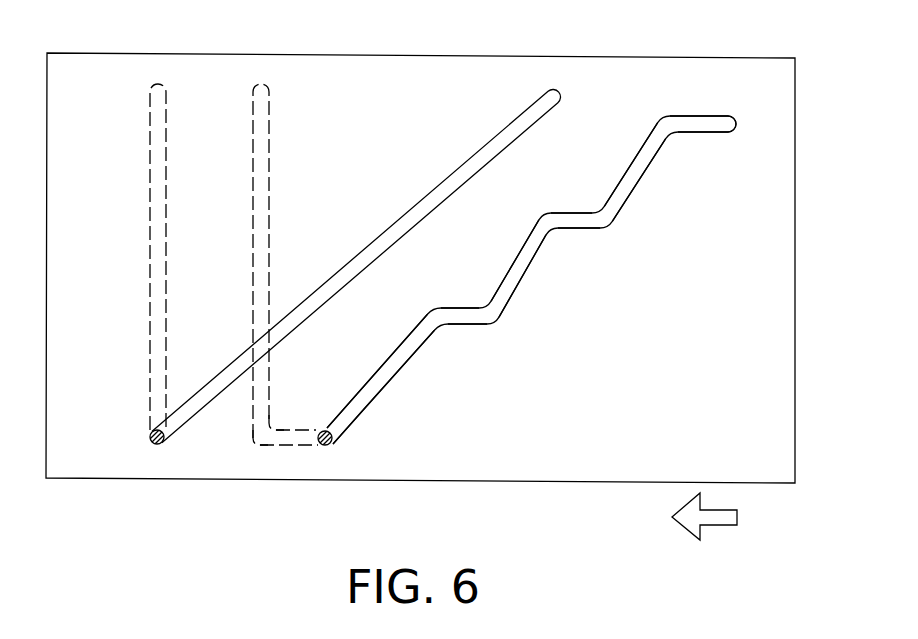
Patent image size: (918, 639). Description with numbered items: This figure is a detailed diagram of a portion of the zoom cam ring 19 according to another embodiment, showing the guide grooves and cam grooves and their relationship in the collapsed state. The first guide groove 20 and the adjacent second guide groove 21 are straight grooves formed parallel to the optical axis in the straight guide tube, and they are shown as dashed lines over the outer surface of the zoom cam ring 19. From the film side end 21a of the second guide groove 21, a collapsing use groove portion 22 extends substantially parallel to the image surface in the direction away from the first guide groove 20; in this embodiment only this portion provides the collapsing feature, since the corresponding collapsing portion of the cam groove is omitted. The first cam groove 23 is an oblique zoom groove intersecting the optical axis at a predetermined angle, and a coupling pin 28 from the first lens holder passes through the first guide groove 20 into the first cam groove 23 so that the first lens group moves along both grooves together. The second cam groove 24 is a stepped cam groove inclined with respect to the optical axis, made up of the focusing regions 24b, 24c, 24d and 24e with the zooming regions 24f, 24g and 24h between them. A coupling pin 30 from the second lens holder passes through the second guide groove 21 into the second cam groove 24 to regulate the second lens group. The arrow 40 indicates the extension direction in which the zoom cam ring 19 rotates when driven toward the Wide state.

The zoom cam ring 19 is at (93, 72).
The first guide groove 20 is at (167, 76).
The second guide groove 21 is at (273, 266).
The film side end 21a is at (253, 442).
The collapsing use groove portion 22 is at (287, 447).
The first cam groove 23 is at (398, 219).
The second cam groove 24 is at (576, 205).
The focusing region 24b is at (348, 432).
The focusing region 24c is at (457, 326).
The focusing region 24d is at (576, 229).
The focusing region 24e is at (686, 115).
The zooming region 24f is at (395, 387).
The zooming region 24g is at (522, 281).
The zooming region 24h is at (638, 186).
The coupling pin 28 is at (157, 445).
The coupling pin 30 is at (326, 446).
The extension direction 40 is at (725, 516).